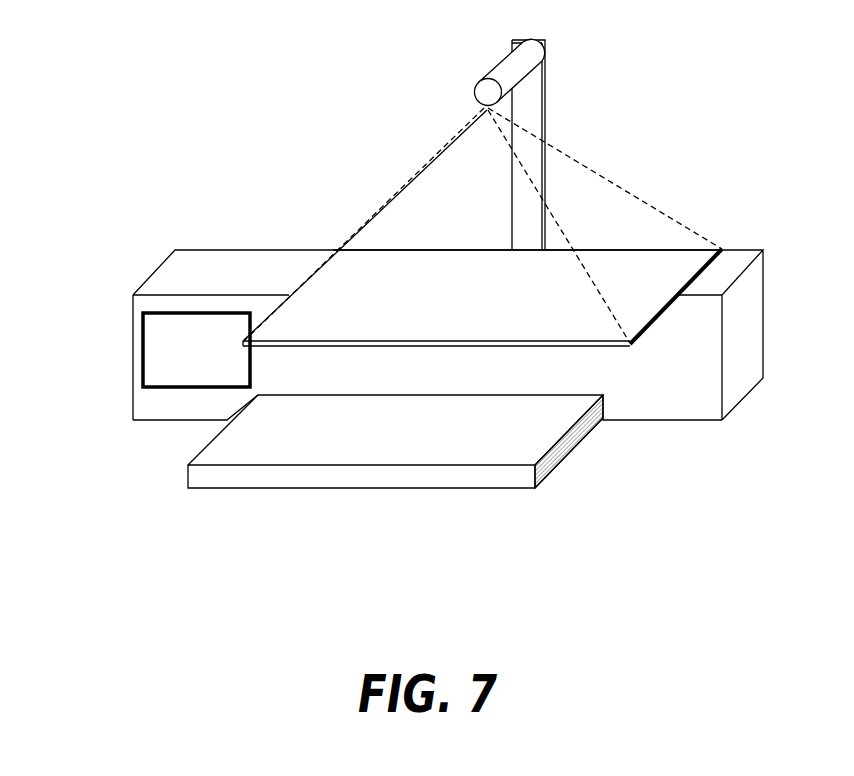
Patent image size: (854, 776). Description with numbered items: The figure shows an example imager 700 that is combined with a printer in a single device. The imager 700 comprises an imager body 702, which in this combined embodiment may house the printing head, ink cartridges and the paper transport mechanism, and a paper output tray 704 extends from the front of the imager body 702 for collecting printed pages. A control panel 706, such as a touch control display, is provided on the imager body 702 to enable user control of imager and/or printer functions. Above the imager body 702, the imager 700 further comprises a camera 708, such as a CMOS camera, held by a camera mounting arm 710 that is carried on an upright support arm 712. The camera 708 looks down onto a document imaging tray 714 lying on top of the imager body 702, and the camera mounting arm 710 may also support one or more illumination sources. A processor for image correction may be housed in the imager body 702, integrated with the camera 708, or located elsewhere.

The imager 700 is at (695, 514).
The imager body 702 is at (215, 250).
The paper output tray 704 is at (195, 490).
The control panel 706 is at (142, 352).
The camera 708 is at (484, 106).
The camera mounting arm 710 is at (499, 58).
The support arm 712 is at (545, 105).
The document imaging tray 714 is at (677, 258).